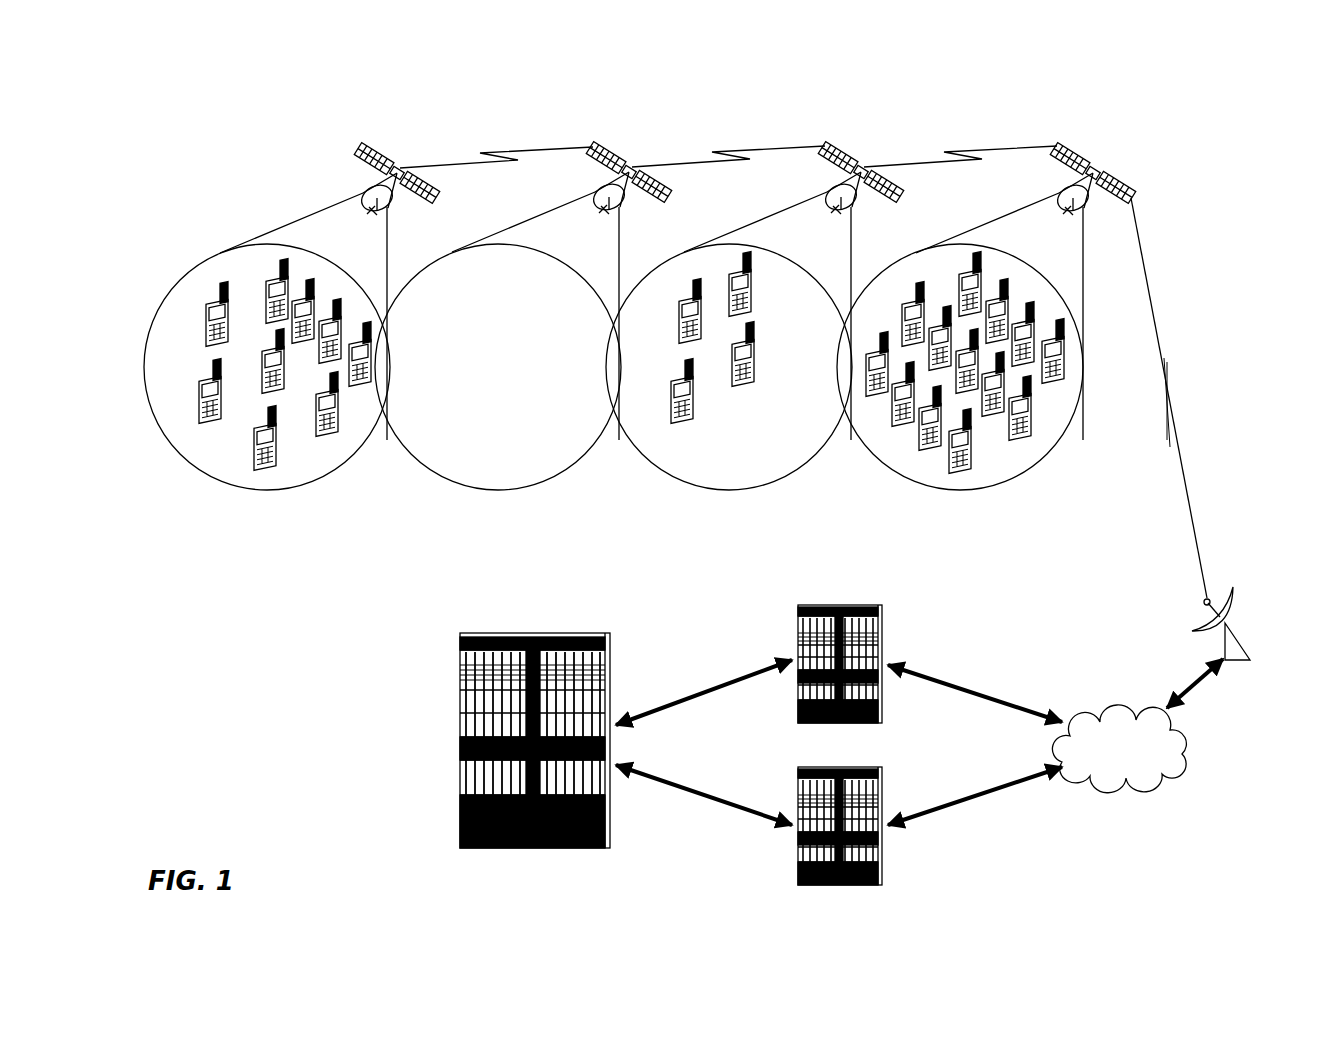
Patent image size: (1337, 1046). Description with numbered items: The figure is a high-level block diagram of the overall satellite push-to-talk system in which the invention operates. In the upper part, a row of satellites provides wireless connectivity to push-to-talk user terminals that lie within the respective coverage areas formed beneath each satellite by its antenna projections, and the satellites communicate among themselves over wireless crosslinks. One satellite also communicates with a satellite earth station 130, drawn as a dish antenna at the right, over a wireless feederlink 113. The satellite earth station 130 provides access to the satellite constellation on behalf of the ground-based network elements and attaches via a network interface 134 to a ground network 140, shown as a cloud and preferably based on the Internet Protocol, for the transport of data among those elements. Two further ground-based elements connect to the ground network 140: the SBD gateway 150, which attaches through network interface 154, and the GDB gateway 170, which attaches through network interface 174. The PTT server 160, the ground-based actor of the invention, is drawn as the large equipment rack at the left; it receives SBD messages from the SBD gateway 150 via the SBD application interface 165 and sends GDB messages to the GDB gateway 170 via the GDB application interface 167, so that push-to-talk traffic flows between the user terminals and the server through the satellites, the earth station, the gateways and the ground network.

The feederlink 113 is at (1153, 306).
The satellite earth station 130 is at (1247, 656).
The network interface 134 is at (1184, 687).
The ground network 140 is at (1119, 749).
The SBD gateway 150 is at (857, 604).
The network interface 154 is at (944, 684).
The PTT server 160 is at (536, 633).
The SBD application interface 165 is at (707, 690).
The GDB application interface 167 is at (719, 790).
The GDB gateway 170 is at (887, 768).
The network interface 174 is at (986, 800).